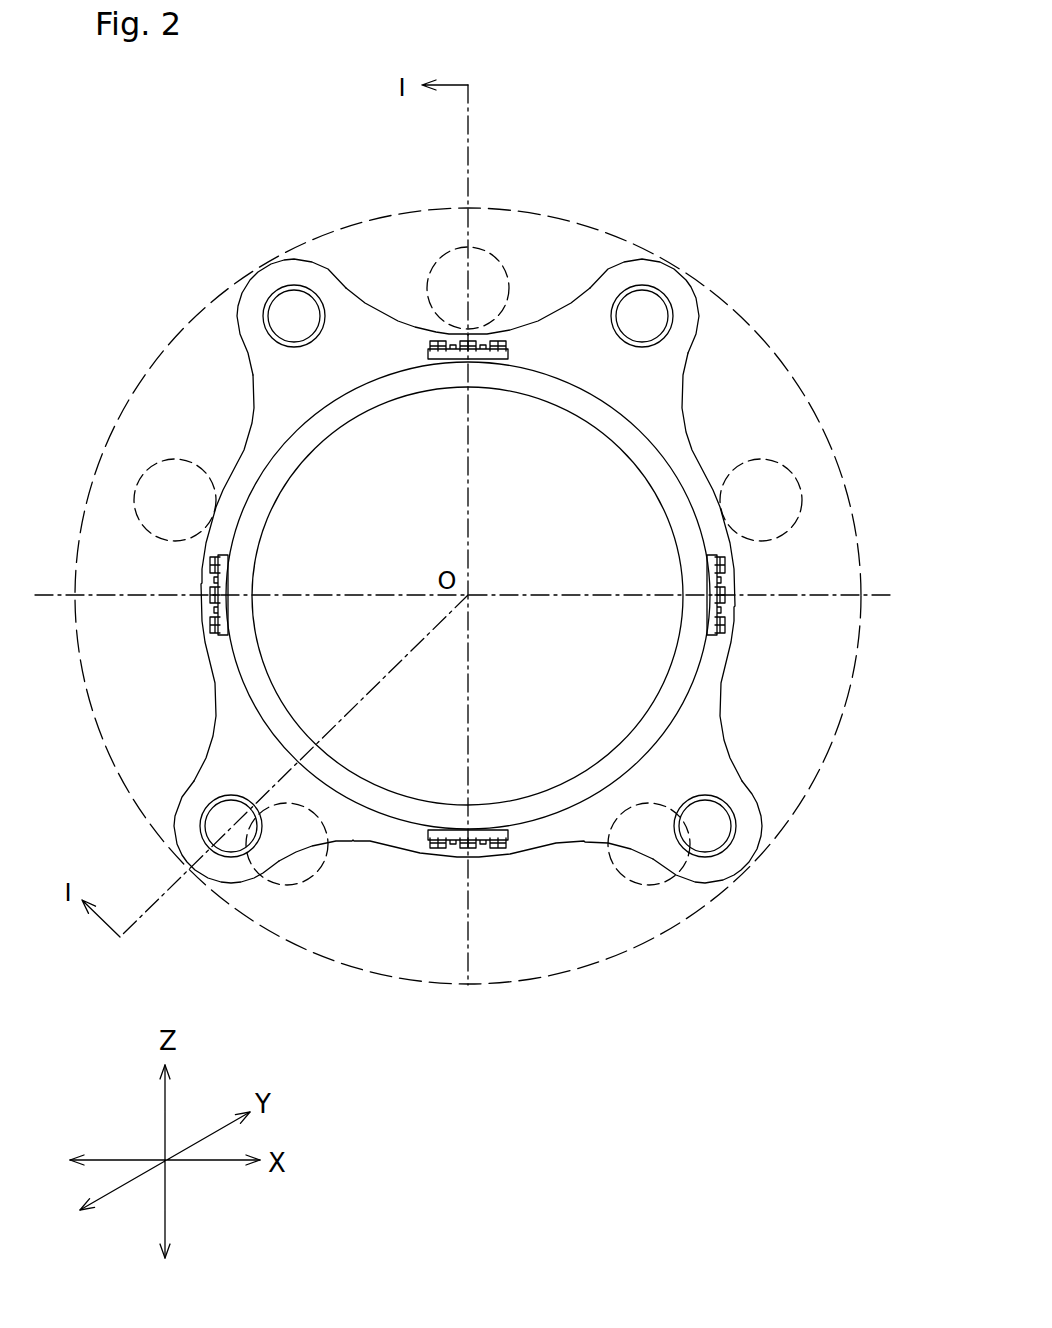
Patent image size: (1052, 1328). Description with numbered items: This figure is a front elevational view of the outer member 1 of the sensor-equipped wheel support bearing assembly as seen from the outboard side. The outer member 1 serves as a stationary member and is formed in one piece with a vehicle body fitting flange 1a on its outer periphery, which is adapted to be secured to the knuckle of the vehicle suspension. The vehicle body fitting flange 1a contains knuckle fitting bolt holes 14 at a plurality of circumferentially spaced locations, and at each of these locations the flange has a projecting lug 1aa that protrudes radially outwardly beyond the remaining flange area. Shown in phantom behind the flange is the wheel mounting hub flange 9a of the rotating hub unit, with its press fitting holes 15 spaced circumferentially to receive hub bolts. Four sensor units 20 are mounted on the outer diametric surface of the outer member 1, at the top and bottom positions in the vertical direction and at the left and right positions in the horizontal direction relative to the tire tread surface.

The outer member 1 is at (747, 376).
The vehicle body fitting flange 1a is at (760, 559).
The projecting lugs 1aa is at (338, 278).
The wheel mounting hub flange 9a is at (197, 300).
The knuckle fitting bolt holes 14 is at (263, 303).
The press fitting holes 15 is at (433, 260).
The sensor units 20 is at (481, 383).